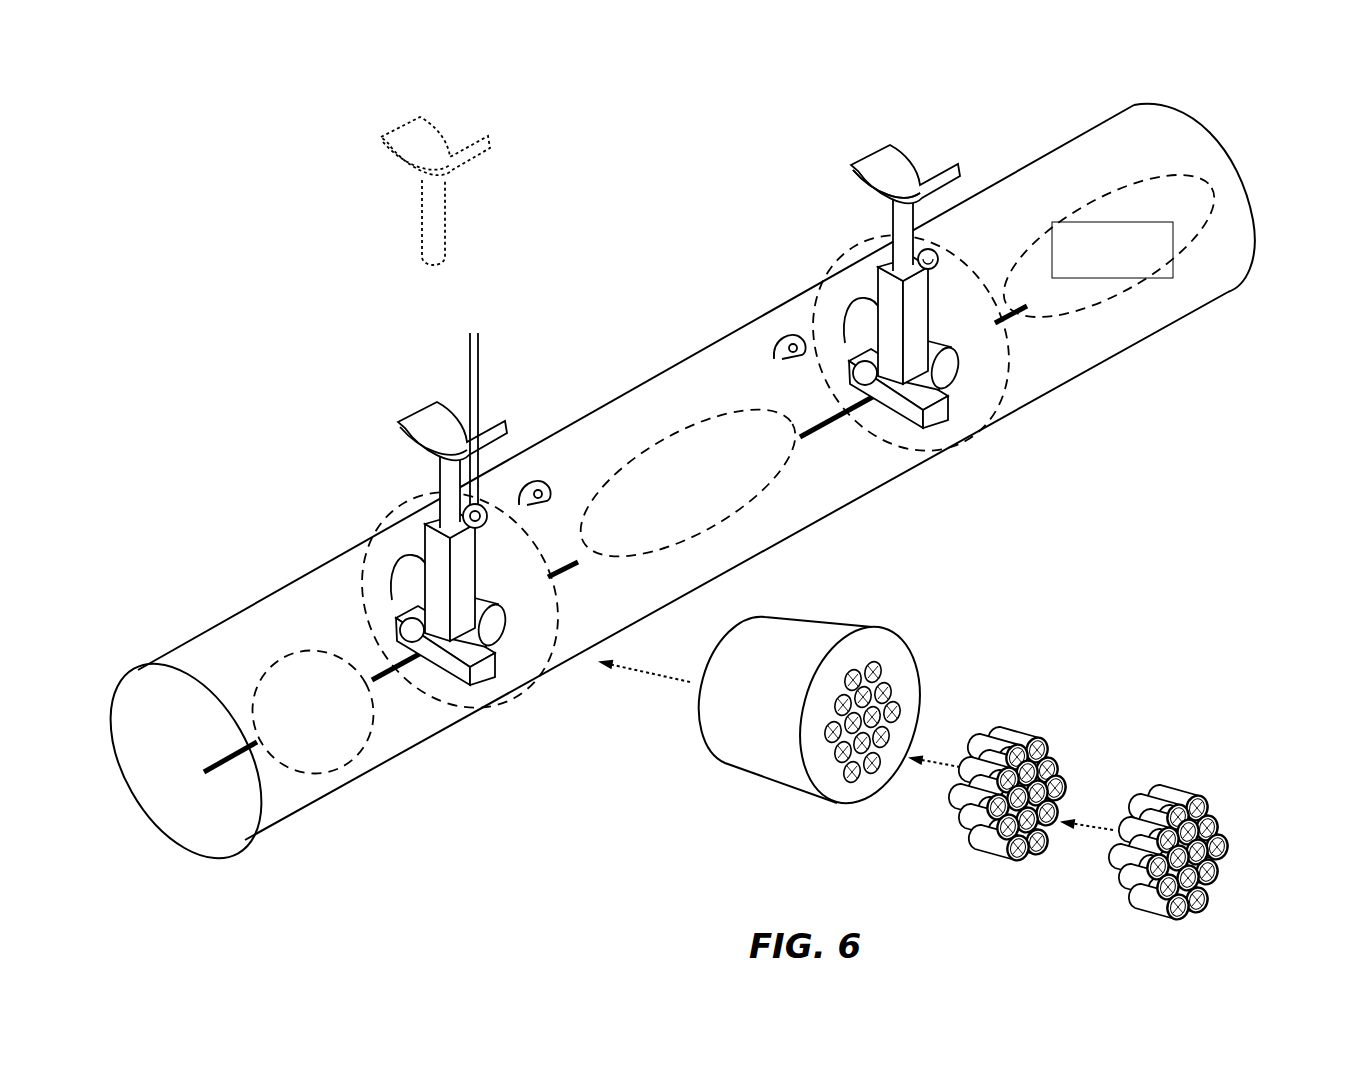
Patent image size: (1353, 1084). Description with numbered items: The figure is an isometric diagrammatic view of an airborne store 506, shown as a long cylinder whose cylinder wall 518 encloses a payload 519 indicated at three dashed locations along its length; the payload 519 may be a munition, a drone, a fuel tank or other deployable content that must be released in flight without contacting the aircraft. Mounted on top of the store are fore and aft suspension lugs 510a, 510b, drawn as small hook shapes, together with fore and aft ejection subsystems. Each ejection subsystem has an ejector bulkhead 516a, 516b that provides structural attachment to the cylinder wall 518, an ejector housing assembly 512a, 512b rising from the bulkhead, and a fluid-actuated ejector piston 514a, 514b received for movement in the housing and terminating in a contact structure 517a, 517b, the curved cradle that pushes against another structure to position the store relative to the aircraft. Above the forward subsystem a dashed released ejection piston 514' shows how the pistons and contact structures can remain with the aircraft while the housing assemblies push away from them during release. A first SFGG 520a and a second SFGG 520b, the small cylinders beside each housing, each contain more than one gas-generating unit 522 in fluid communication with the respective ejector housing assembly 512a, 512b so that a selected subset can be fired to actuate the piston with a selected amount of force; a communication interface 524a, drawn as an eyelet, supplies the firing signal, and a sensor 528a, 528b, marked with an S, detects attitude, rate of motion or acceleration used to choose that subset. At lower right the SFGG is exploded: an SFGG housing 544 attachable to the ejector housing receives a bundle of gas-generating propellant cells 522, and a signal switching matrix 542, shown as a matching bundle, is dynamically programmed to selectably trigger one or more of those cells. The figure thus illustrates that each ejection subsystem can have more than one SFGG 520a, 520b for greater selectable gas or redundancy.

The airborne store 506 is at (214, 621).
The fore suspension lug 510a is at (548, 482).
The aft suspension lug 510b is at (785, 338).
The first ejector housing assembly 512a is at (443, 676).
The second ejector housing assembly 512b is at (905, 420).
The released ejection piston 514' is at (398, 191).
The first fluid-actuated ejector piston 514a is at (397, 440).
The second fluid-actuated ejector piston 514b is at (896, 148).
The ejector bulkhead 516a is at (420, 690).
The ejector bulkhead 516b is at (872, 435).
The contact structure 517a is at (416, 432).
The contact structure 517b is at (925, 163).
The cylinder wall 518 is at (639, 386).
The payload 519 is at (732, 471).
The first SFGG 520a is at (408, 554).
The second SFGG 520b is at (853, 292).
The gas-generating unit 522 is at (1030, 733).
The first communication interface 524a is at (490, 505).
The sensor 528a is at (398, 628).
The sensor 528b is at (855, 366).
The signal switching matrix 542 is at (1180, 788).
The SFGG housing 544 is at (862, 626).